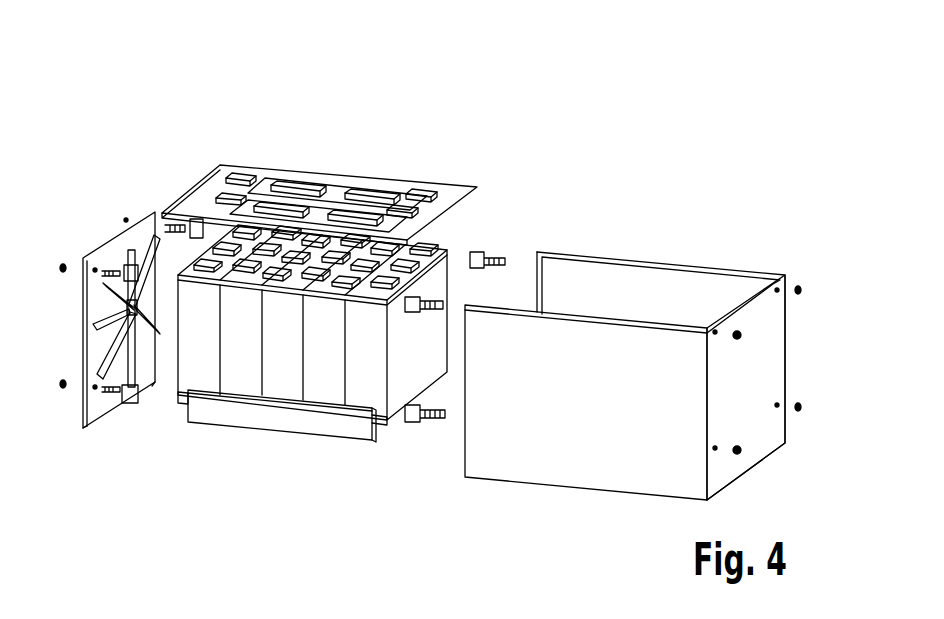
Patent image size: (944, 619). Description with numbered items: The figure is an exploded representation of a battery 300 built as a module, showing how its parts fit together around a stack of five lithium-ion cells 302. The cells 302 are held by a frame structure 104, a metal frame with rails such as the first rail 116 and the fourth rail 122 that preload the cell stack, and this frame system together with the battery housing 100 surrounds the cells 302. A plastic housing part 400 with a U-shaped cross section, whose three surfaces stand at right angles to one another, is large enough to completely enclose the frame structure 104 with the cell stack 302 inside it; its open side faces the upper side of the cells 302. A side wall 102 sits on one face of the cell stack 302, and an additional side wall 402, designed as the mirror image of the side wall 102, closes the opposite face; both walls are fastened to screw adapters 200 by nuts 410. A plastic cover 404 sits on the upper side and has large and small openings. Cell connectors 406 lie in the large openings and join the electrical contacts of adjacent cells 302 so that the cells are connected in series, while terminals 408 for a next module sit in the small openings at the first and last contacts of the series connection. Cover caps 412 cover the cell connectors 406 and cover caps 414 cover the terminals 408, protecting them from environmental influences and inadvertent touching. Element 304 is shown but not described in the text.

The battery housing 100 is at (548, 180).
The battery 300 is at (140, 157).
The side wall 102 is at (108, 250).
The frame structure 104 is at (282, 130).
The first rail 116 is at (285, 420).
The fourth rail 122 is at (322, 297).
The screw adapter 200 is at (415, 424).
The lithium-ion cell 302 is at (363, 383).
The foot 304 is at (182, 407).
The housing part 400 is at (658, 277).
The additional side wall 402 is at (765, 362).
The cover 404 is at (443, 197).
The cell connector 406 is at (397, 217).
The terminal 408 is at (212, 197).
The nut 410 is at (62, 393).
The cover cap for cell connectors 412 is at (348, 157).
The cover cap for the poles 414 is at (360, 175).